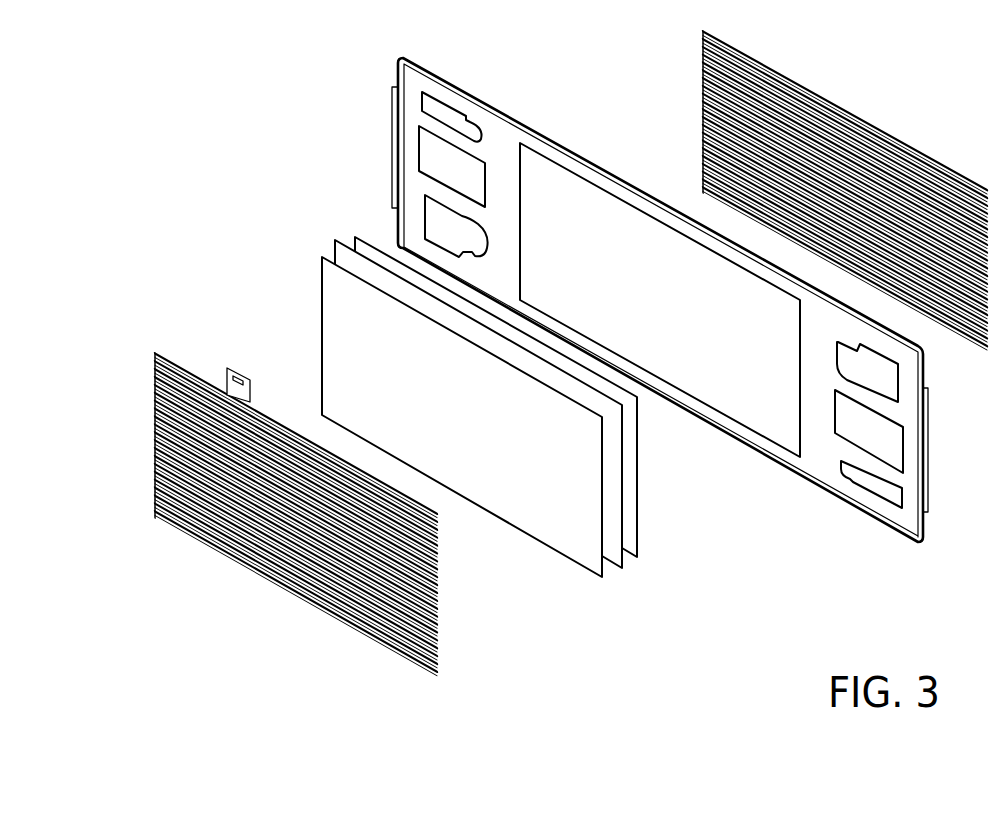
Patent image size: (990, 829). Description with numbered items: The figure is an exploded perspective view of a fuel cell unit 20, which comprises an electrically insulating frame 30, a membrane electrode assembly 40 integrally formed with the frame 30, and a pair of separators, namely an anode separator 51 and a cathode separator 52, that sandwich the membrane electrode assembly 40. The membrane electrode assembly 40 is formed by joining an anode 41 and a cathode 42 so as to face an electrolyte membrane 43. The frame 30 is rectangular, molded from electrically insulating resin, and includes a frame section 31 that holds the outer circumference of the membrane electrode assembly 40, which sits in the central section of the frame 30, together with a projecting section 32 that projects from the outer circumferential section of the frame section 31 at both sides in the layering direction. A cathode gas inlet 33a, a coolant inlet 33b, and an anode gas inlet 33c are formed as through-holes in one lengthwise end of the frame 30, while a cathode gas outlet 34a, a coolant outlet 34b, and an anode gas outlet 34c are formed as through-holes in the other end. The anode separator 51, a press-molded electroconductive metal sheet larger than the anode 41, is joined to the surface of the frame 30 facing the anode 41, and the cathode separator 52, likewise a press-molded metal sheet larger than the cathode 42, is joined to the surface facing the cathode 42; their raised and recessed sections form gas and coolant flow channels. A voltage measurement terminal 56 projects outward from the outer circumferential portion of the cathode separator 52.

The fuel cell unit 20 is at (167, 52).
The frame 30 is at (412, 46).
The frame section 31 is at (515, 197).
The projecting section 32 is at (498, 110).
The cathode gas inlet 33a is at (427, 102).
The coolant inlet 33b is at (427, 152).
The anode gas inlet 33c is at (430, 220).
The cathode gas outlet 34a is at (893, 493).
The coolant outlet 34b is at (897, 445).
The anode gas outlet 34c is at (890, 378).
The membrane electrode assembly 40 is at (717, 598).
The anode 41 is at (637, 557).
The cathode 42 is at (602, 577).
The electrolyte membrane 43 is at (623, 572).
The anode separator 51 is at (845, 110).
The cathode separator 52 is at (295, 600).
The voltage measurement terminal 56 is at (225, 378).